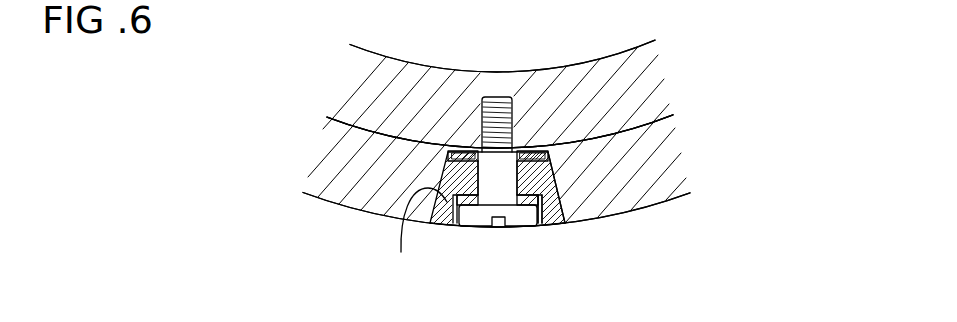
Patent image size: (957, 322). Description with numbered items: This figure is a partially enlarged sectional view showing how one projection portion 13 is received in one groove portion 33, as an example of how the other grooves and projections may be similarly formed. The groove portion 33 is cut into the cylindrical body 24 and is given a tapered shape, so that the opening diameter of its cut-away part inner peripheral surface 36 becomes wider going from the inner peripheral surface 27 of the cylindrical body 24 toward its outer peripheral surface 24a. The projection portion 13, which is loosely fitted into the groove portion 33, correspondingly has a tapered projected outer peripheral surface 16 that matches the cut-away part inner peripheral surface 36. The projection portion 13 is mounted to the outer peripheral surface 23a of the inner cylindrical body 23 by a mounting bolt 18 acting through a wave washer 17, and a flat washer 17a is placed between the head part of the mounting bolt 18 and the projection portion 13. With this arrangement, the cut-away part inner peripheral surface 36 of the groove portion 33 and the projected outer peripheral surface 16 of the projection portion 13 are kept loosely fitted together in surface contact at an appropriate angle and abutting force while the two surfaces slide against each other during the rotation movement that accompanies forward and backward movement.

The projection portion 13 is at (557, 181).
The projected outer peripheral surface 16 is at (419, 230).
The wave washer 17 is at (470, 151).
The flat washer 17a is at (441, 213).
The mounting bolt 18 is at (482, 213).
The cylindrical body 23 is at (331, 73).
The outer peripheral surface 23a is at (368, 146).
The cylindrical body 24 is at (299, 168).
The outer peripheral surface 24a is at (338, 203).
The inner peripheral surface 27 is at (380, 54).
The groove portion 33 is at (542, 222).
The cut-away part inner peripheral surface 36 is at (546, 196).